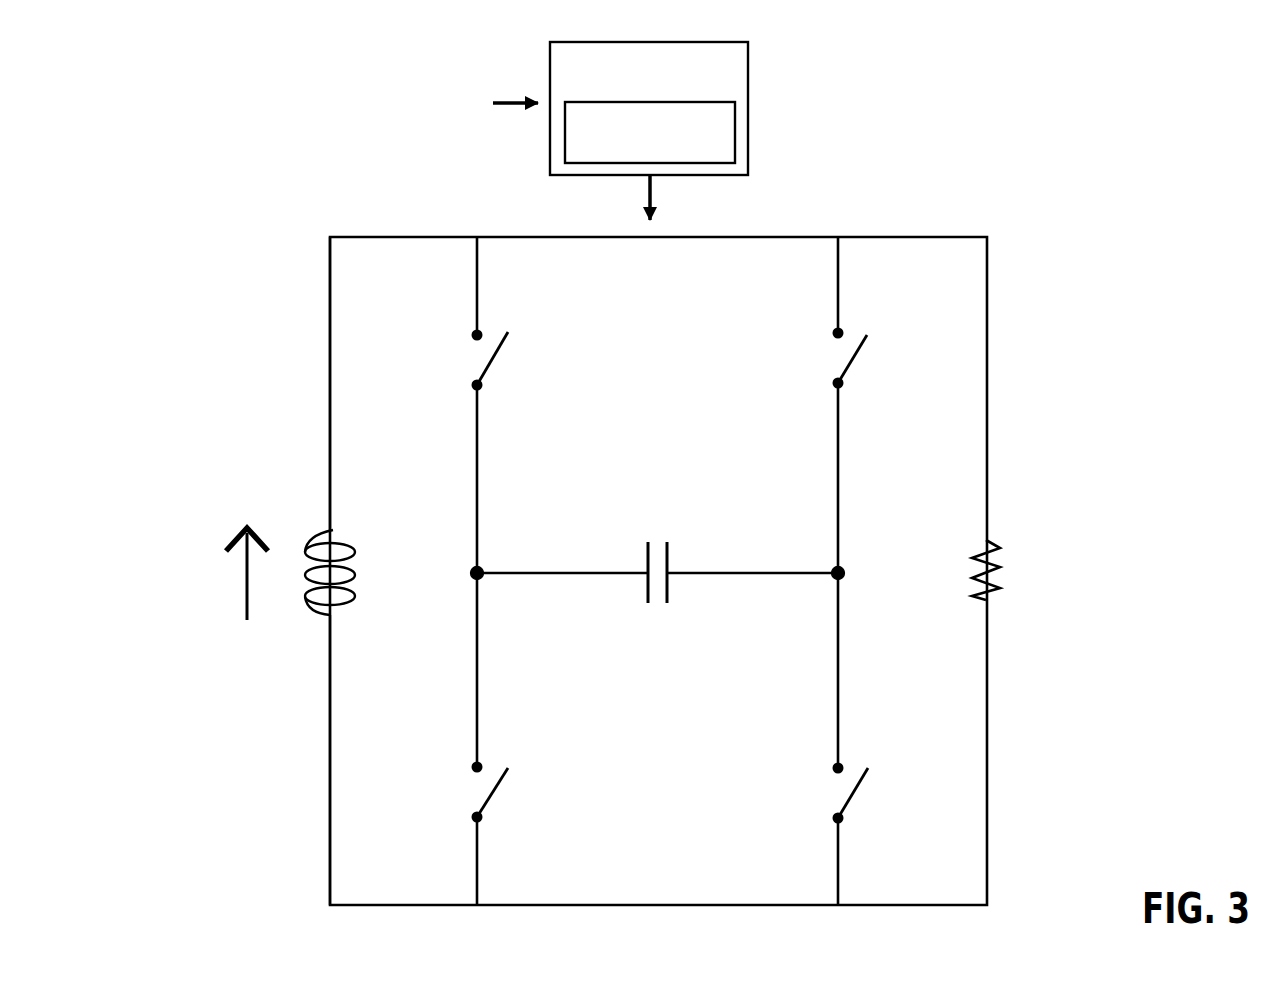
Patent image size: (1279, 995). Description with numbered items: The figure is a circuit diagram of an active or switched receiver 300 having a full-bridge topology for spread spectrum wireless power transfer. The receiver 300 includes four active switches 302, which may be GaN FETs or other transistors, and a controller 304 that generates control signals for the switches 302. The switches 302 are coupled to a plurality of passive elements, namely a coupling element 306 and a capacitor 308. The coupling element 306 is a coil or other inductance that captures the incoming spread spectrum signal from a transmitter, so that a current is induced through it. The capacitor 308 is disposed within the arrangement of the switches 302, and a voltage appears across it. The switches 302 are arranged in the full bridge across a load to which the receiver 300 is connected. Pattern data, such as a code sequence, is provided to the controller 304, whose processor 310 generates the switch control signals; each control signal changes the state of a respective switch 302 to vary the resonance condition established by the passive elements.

The receiver 300 is at (1066, 161).
The active switches 302 is at (509, 316).
The controller 304 is at (712, 45).
The coupling element 306 is at (309, 503).
The capacitor 308 is at (662, 617).
The processor 310 is at (735, 130).